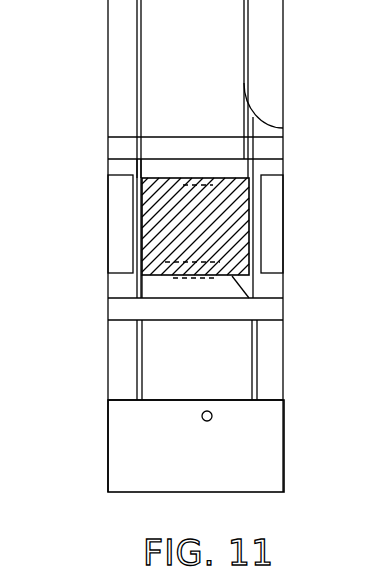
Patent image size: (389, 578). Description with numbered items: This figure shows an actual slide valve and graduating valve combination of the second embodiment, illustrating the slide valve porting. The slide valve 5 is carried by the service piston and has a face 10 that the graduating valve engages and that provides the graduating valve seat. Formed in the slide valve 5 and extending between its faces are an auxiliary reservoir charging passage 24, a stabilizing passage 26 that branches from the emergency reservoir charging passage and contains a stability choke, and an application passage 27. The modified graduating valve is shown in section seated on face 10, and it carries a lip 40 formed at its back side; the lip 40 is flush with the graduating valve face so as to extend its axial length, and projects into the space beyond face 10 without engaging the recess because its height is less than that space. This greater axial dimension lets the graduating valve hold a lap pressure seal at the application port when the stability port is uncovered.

The slide valve 5 is at (108, 355).
The face of slide valve 10 is at (177, 163).
The auxiliary reservoir charging passage 24 is at (195, 178).
The stabilizing passage 26 is at (160, 180).
The application passage 27 is at (130, 235).
The lip 40 is at (193, 287).